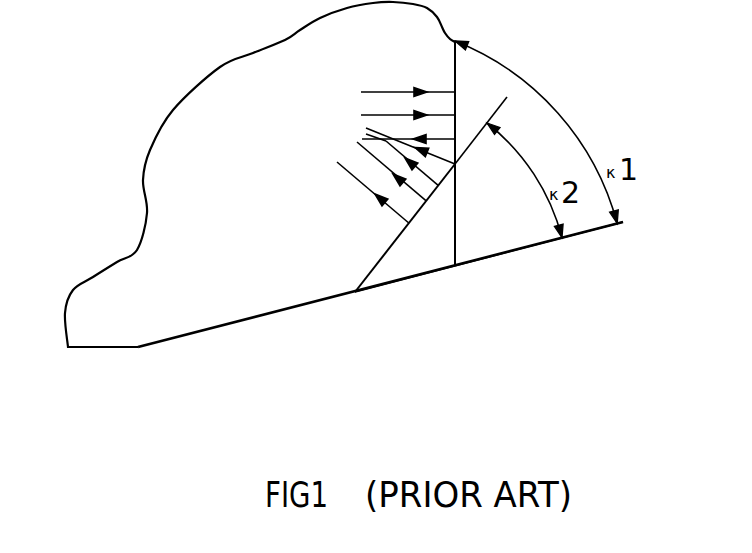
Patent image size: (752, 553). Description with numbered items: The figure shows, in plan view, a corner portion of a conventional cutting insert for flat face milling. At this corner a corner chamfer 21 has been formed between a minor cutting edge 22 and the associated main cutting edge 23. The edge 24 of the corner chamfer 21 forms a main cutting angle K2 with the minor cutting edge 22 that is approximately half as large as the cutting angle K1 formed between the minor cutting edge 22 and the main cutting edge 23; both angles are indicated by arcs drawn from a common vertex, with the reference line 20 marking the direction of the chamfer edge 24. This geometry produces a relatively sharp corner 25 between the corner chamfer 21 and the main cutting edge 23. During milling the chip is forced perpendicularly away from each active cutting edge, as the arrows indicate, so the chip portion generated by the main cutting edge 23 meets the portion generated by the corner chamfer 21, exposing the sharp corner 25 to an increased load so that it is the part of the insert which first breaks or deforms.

The reference line (extension of inclined surface) 20 is at (527, 128).
The corner chamfer 21 is at (398, 268).
The minor cutting edge 22 is at (240, 325).
The main cutting edge 23 is at (457, 78).
The edge of the corner chamfer 24 is at (384, 260).
The sharp corner 25 is at (457, 165).